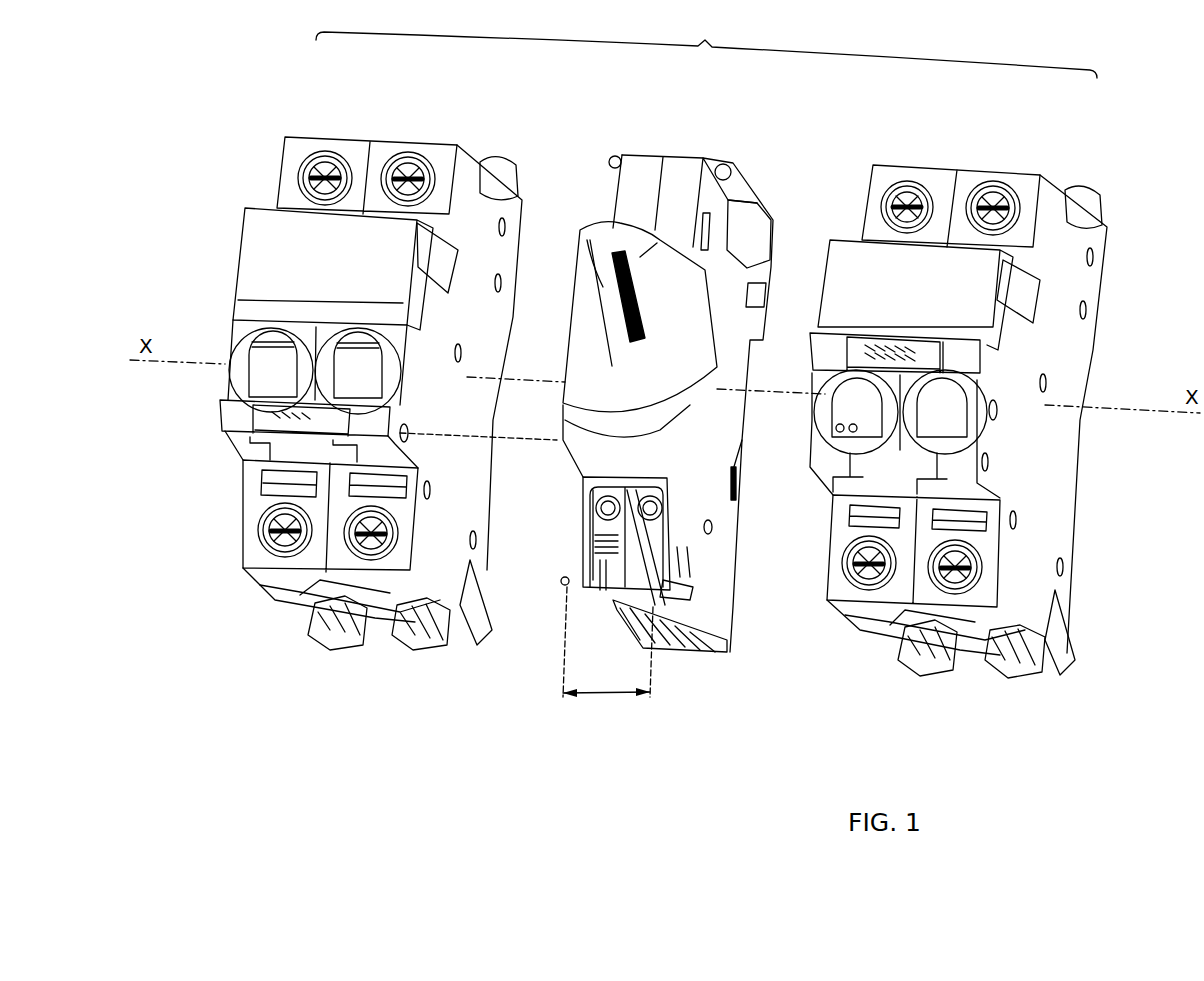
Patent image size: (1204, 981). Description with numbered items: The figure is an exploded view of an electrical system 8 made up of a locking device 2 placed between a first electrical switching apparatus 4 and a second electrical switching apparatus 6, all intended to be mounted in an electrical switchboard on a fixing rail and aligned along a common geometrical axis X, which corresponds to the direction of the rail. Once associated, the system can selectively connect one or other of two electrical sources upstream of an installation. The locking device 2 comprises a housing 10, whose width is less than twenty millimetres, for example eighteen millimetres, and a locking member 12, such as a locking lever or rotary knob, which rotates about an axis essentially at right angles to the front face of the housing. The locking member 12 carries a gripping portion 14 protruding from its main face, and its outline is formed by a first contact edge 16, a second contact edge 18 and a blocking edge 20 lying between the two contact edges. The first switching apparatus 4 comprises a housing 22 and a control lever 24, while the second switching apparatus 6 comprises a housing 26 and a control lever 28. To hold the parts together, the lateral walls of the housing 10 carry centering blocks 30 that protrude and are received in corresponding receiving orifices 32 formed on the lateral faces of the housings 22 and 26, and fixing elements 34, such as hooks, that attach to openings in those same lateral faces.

The locking device 2 is at (691, 110).
The first electrical switching apparatus 4 is at (391, 95).
The second electrical switching apparatus 6 is at (998, 110).
The electrical system 8 is at (706, 43).
The housing 10 is at (716, 628).
The locking member 12 is at (680, 273).
The gripping portion 14 is at (607, 283).
The first contact edge 16 is at (550, 322).
The second contact edge 18 is at (707, 283).
The blocking edge 20 is at (708, 420).
The housing 22 is at (463, 573).
The control lever 24 is at (221, 408).
The housing 26 is at (1022, 590).
The control lever 28 is at (967, 330).
The centering blocks 30 is at (692, 464).
The receiving orifices 32 is at (435, 455).
The fixing elements 34 is at (612, 150).